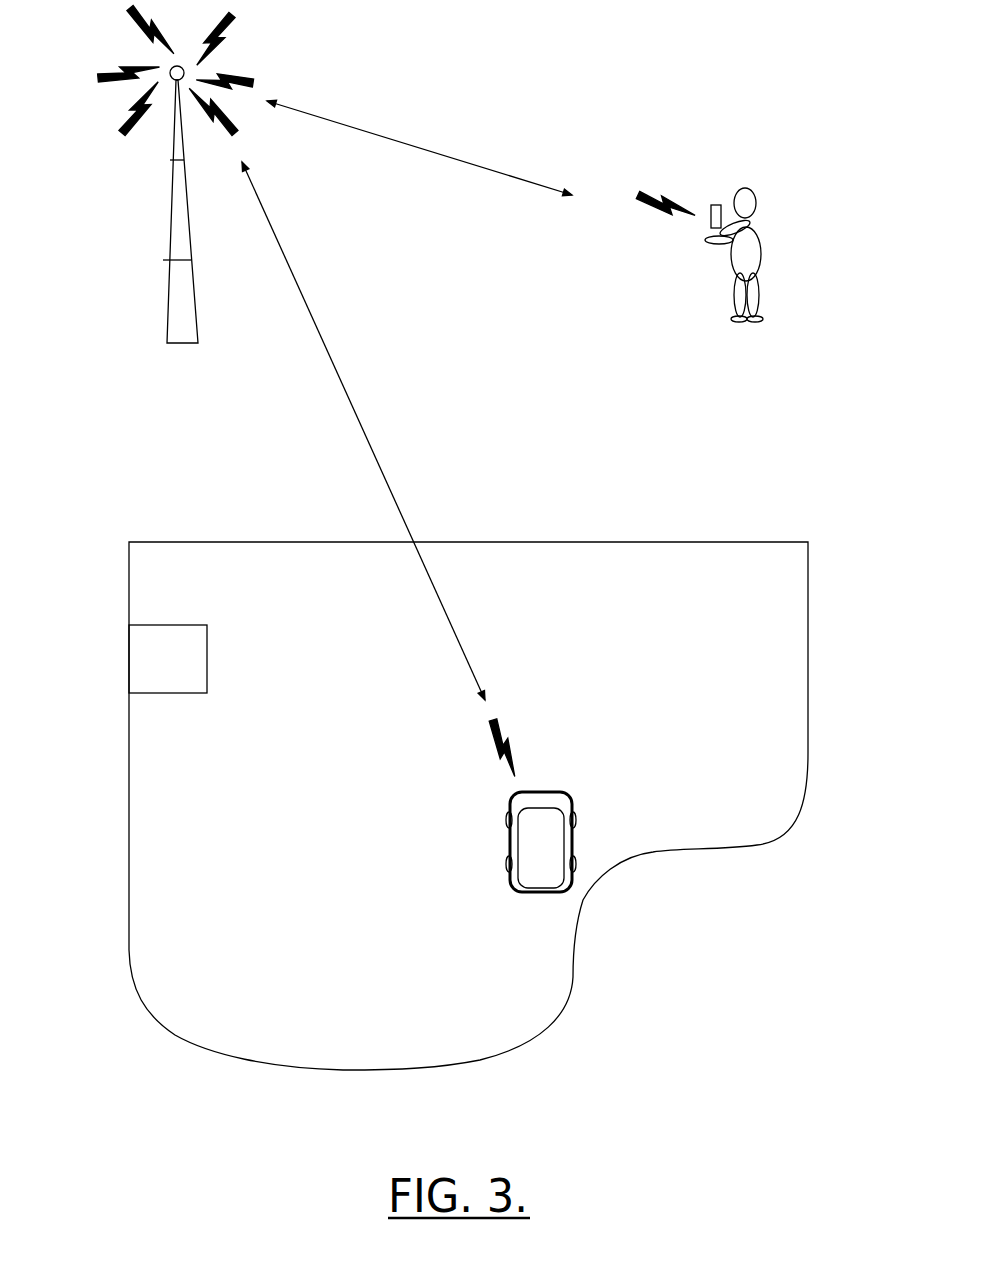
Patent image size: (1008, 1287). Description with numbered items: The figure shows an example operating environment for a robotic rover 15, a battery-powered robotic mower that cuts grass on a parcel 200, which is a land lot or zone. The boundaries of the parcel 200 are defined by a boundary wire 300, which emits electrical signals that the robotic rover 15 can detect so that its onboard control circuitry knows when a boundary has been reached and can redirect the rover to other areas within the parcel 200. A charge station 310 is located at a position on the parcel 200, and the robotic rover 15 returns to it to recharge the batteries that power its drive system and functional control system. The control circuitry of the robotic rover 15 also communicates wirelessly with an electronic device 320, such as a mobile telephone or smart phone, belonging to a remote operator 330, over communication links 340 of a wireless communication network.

The robotic rover 15 is at (572, 830).
The parcel 200 is at (348, 877).
The boundary wire 300 is at (573, 978).
The charge station 310 is at (155, 656).
The electronic device 320 is at (718, 198).
The remote operator 330 is at (783, 197).
The communication links 340 is at (306, 294).